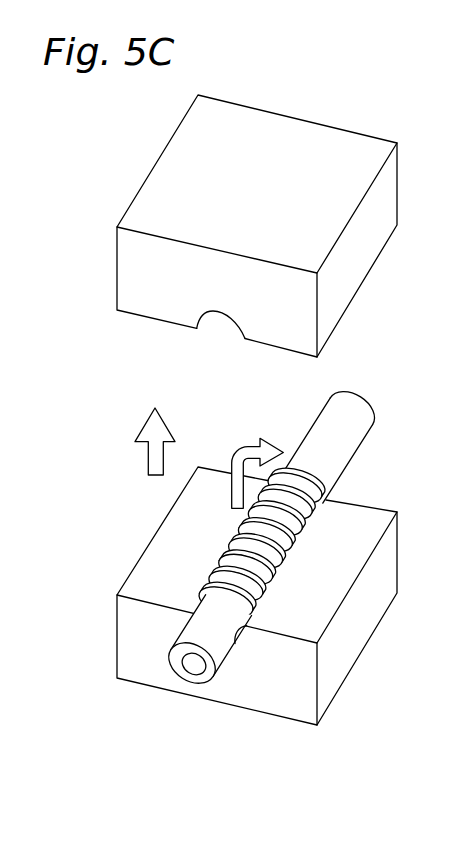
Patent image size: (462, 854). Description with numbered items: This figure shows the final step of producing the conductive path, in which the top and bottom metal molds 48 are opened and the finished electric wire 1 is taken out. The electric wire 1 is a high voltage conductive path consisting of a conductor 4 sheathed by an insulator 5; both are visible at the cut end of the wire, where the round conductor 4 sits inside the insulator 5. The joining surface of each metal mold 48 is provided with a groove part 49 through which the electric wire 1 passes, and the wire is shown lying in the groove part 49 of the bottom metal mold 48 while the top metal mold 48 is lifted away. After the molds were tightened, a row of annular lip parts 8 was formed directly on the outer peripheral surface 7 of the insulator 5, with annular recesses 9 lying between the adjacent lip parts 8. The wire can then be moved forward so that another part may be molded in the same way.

The electric wire 1 is at (240, 585).
The conductor 4 is at (186, 652).
The insulator 5 is at (190, 662).
The outer peripheral surface 7 is at (240, 534).
The lip part 8 is at (309, 531).
The annular recess 9 is at (306, 492).
The metal mold 48 is at (190, 163).
The groove part 49 is at (204, 322).